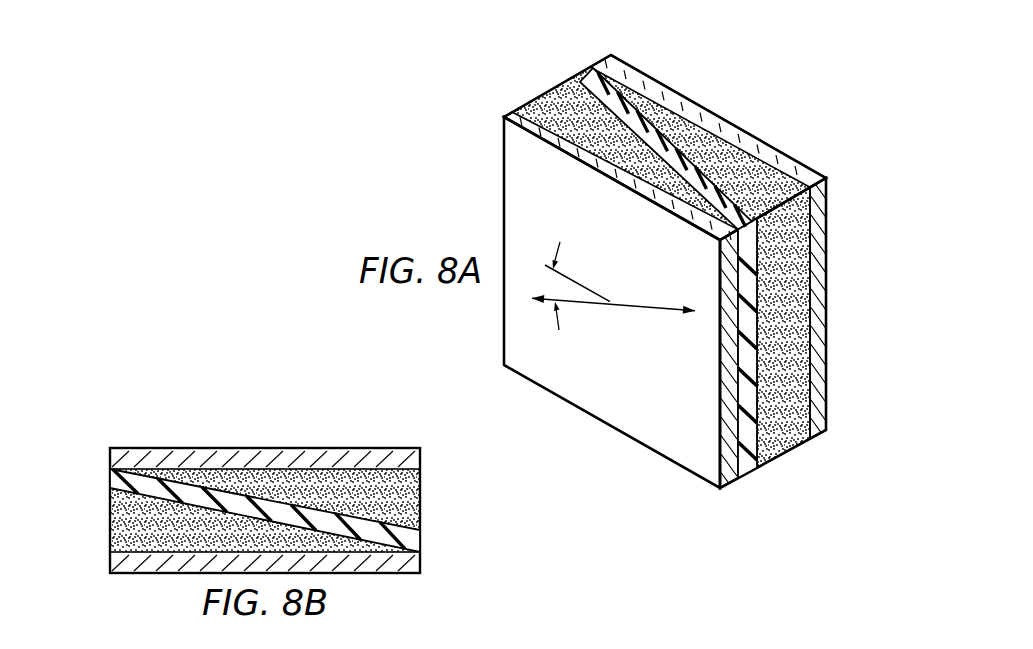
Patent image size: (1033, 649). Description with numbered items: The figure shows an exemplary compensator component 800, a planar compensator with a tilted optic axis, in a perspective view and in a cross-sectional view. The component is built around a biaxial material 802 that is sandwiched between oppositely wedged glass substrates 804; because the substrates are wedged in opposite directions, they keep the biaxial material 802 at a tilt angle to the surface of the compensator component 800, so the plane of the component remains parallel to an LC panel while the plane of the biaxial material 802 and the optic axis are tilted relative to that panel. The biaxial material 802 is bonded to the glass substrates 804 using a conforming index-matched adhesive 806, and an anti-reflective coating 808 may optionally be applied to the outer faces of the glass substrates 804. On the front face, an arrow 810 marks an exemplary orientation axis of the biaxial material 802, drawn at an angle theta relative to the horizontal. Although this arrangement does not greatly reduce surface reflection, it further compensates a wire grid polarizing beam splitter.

In FIG. 8A, the compensator component 800 is at (663, 275).
In FIG. 8B, the compensator component 800 is at (262, 474).
In FIG. 8A, the biaxial material 802 is at (588, 68).
In FIG. 8A, the glass substrates 804 is at (538, 93).
In FIG. 8B, the glass substrates 804 is at (115, 530).
In FIG. 8A, the conforming index-matched adhesive 806 is at (652, 275).
In FIG. 8B, the conforming index-matched adhesive 806 is at (122, 495).
In FIG. 8A, the anti-reflective coating 808 is at (777, 155).
In FIG. 8B, the anti-reflective coating 808 is at (118, 460).
In FIG. 8A, the arrow 810 is at (643, 307).